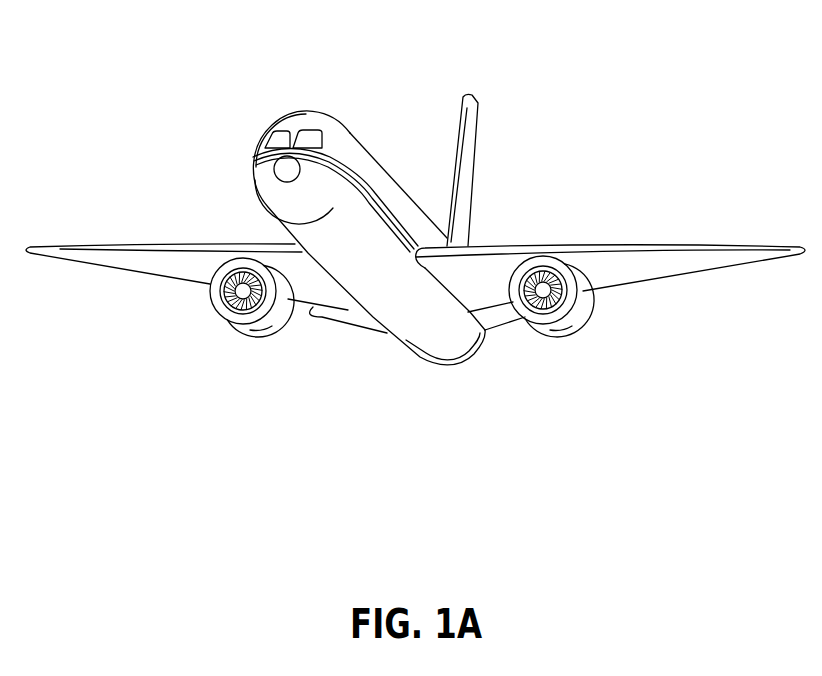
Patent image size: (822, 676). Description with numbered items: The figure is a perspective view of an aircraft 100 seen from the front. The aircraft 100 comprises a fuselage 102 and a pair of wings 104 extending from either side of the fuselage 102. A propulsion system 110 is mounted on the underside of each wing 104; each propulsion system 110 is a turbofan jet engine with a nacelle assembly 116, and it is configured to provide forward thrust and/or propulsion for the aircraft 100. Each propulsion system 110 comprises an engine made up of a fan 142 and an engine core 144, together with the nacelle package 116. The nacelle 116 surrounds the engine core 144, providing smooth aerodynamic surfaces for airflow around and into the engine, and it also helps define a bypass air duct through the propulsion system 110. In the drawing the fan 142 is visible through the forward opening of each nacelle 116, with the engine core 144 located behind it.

The aircraft 100 is at (164, 80).
The fuselage 102 is at (377, 168).
The wings 104 is at (143, 245).
The propulsion system 110 is at (250, 334).
The nacelle package 116 is at (207, 293).
The fan 142 is at (267, 306).
The engine core 144 is at (230, 318).